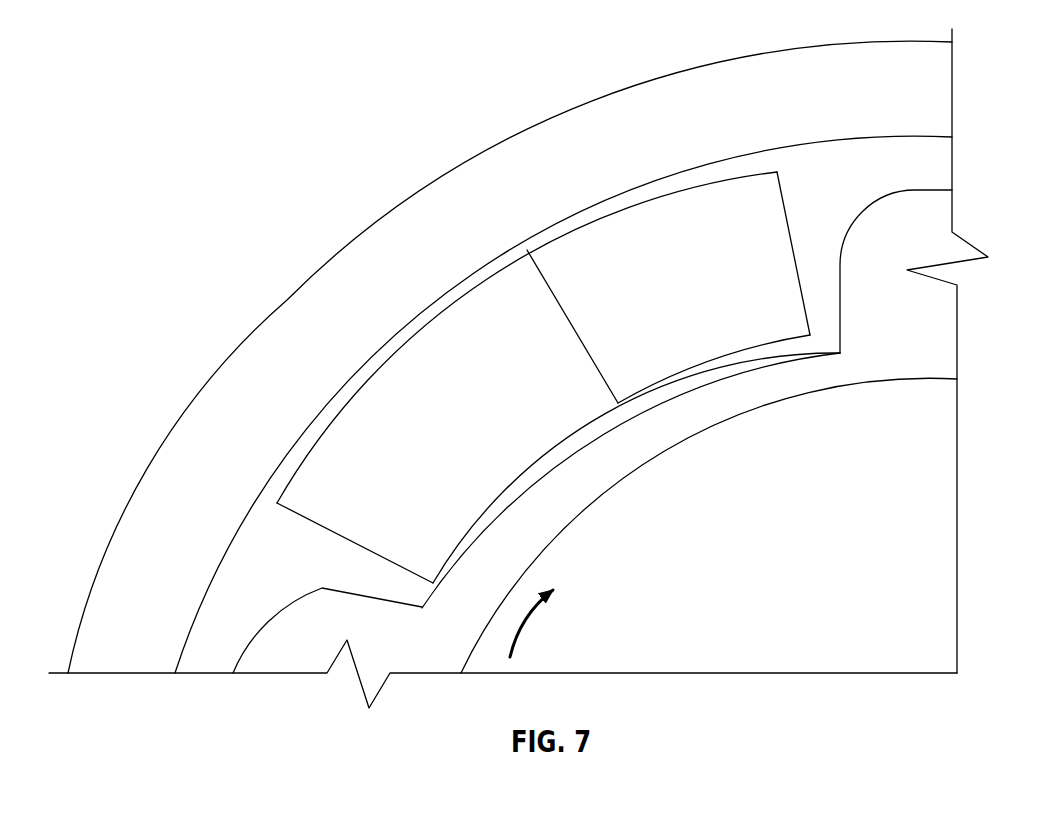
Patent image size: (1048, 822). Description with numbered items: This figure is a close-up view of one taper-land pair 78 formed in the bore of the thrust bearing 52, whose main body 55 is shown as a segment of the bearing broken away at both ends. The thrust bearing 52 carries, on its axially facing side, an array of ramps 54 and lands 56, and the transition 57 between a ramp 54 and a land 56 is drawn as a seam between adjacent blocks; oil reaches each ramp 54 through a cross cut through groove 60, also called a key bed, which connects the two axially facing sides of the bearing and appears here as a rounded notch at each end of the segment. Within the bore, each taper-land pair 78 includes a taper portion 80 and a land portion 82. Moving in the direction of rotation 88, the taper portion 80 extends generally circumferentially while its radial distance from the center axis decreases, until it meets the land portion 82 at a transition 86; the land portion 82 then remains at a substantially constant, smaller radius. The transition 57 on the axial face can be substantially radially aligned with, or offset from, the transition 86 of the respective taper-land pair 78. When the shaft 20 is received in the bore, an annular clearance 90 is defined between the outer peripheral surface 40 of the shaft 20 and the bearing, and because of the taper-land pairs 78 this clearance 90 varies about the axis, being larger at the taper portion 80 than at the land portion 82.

The shaft 20 is at (923, 473).
The outer peripheral surface 40 is at (917, 378).
The thrust bearing 52 is at (927, 140).
The ramp 54 is at (480, 297).
The main body 55 is at (933, 167).
The land 56 is at (593, 248).
The transition between ramp and land 57 is at (526, 254).
The cross cut through groove 60 is at (917, 233).
The taper-land pair 78 is at (643, 442).
The taper portion 80 is at (548, 485).
The land portion 82 is at (731, 387).
The transition between taper and land 86 is at (674, 407).
The direction of rotation 88 is at (525, 628).
The annular clearance 90 is at (523, 523).